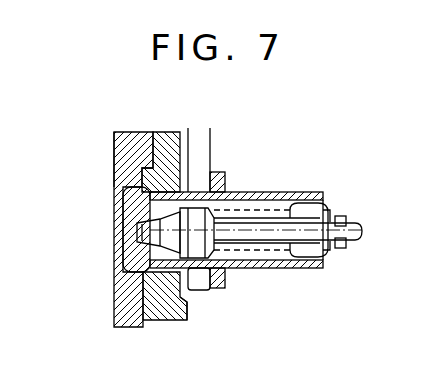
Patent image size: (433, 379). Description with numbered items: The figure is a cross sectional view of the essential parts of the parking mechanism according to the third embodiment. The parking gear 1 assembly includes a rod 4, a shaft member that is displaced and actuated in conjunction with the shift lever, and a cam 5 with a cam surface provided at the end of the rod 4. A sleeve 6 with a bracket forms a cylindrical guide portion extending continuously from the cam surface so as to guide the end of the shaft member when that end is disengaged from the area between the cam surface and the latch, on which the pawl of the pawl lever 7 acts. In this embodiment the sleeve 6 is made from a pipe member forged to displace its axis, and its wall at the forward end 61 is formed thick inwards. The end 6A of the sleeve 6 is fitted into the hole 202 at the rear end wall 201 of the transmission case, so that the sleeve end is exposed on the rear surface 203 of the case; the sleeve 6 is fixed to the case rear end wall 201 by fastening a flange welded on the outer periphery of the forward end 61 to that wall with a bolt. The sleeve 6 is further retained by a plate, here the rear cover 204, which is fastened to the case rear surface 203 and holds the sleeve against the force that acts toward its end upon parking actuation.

The parking gear 1 is at (113, 287).
The rod 4 is at (350, 222).
The cam 5 is at (150, 222).
The sleeve 6 is at (270, 192).
The end of the sleeve 6A is at (125, 193).
The pawl lever 7 is at (203, 143).
The forward end 61 is at (148, 254).
The rear end wall 201 is at (167, 318).
The hole 202 is at (187, 301).
The rear surface 203 is at (146, 144).
The rear cover 204 is at (128, 163).